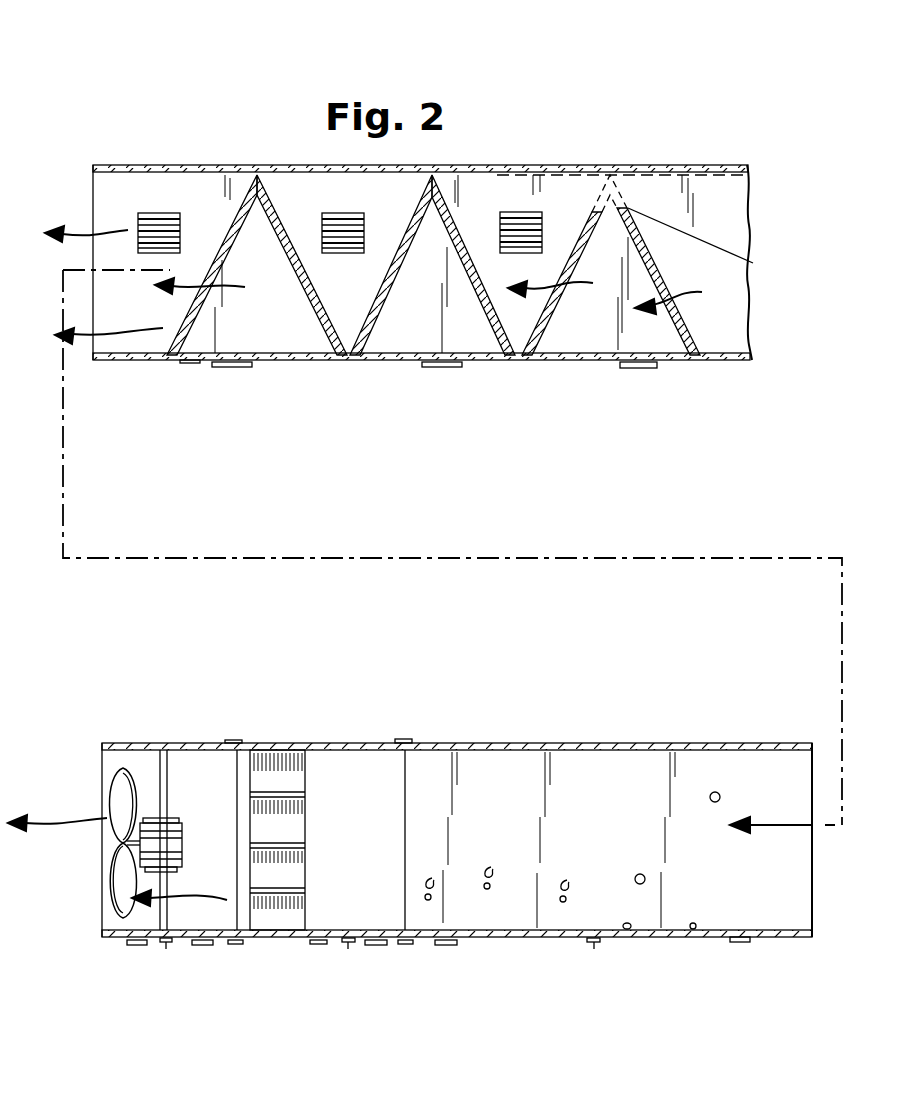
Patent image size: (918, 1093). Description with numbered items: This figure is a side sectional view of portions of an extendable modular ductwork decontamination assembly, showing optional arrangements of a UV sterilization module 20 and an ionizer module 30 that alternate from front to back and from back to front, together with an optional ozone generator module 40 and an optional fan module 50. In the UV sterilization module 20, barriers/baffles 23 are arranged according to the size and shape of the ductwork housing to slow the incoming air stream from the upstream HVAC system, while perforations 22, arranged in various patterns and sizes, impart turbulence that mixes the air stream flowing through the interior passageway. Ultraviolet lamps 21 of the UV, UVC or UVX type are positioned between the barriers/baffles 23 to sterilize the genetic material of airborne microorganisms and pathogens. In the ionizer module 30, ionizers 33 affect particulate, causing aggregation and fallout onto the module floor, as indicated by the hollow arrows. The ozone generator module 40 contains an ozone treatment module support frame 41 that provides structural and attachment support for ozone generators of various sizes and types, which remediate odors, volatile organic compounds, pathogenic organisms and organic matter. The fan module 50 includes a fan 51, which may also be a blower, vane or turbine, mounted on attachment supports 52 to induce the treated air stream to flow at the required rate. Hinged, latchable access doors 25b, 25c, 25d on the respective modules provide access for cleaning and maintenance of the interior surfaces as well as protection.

The UV sterilization module 20 is at (280, 160).
The ultraviolet lamp 21 is at (140, 223).
The perforations 22 is at (330, 332).
The barriers/baffles 23 is at (220, 233).
The ionizer module 30 is at (606, 977).
The ionizers 33 is at (638, 873).
The ozone generator module 40 is at (280, 733).
The ozone treatment module support frame 41 is at (258, 918).
The fan module 50 is at (104, 894).
The fan 51 is at (112, 888).
The attachment support 52 is at (160, 765).
The access door 25b is at (517, 937).
The access door 25c is at (332, 937).
The access door 25d is at (180, 942).